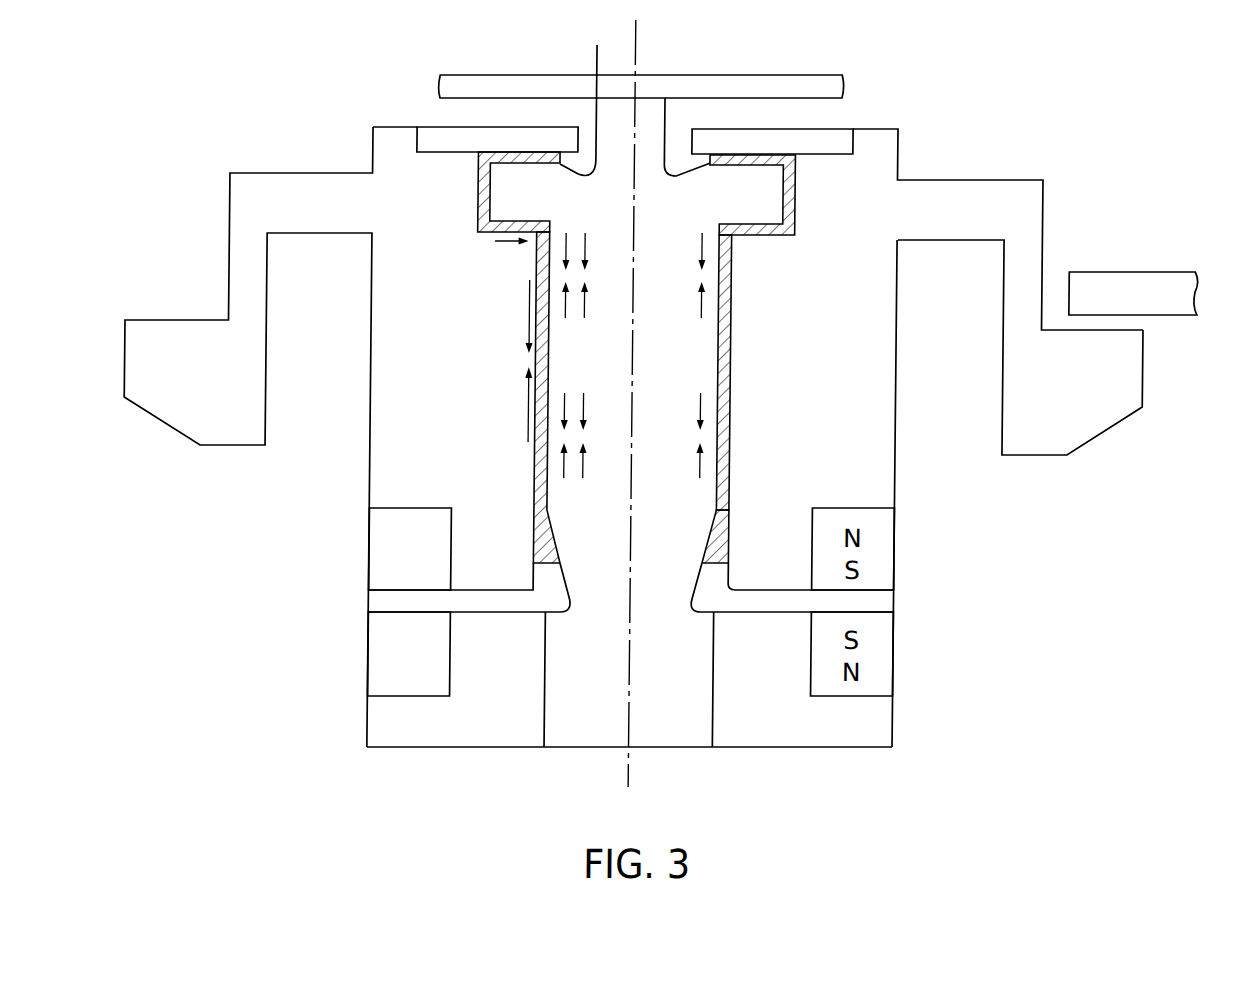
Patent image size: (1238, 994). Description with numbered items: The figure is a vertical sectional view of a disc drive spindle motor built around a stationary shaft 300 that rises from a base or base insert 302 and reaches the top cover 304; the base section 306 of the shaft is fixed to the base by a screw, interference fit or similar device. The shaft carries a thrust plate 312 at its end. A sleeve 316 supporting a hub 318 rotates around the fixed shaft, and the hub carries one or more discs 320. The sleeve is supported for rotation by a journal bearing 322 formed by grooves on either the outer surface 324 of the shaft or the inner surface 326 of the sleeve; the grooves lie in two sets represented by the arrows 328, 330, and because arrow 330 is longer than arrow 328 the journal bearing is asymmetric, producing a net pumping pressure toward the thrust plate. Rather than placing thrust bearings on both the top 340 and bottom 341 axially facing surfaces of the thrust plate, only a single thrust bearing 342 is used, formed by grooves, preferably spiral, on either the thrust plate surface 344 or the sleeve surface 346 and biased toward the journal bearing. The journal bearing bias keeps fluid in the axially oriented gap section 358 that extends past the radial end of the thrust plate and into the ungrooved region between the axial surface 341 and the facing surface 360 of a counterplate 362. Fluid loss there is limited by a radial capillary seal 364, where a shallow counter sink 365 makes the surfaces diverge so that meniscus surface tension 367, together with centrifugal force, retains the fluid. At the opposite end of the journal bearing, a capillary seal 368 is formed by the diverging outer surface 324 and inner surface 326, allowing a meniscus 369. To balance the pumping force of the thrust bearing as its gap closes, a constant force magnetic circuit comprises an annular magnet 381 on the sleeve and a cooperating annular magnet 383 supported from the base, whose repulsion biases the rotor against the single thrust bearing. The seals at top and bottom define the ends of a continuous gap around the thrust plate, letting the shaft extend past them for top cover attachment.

The stationary shaft 300 is at (692, 723).
The base or base insert 302 is at (877, 725).
The top cover 304 is at (773, 83).
The base section of the shaft 306 is at (602, 732).
The thrust plate 312 is at (750, 203).
The sleeve 316 is at (882, 489).
The hub 318 is at (1106, 420).
The disc 320 is at (1123, 285).
The journal bearing 322 is at (729, 380).
The outer surface of the shaft 324 is at (728, 320).
The inner surface of the sleeve 326 is at (726, 443).
The journal bearing groove set (arrow) 328 is at (532, 320).
The journal bearing groove set (arrow) 330 is at (532, 413).
The top axially facing surface of the thrust plate 340 is at (492, 233).
The bottom axially facing surface of the thrust plate 341 is at (489, 173).
The single thrust bearing 342 is at (514, 243).
The thrust plate surface 344 is at (530, 220).
The sleeve axial surface 346 is at (759, 237).
The axially oriented gap section 358 is at (480, 201).
The facing surface of counterplate 360 is at (490, 152).
The counterplate 362 is at (518, 140).
The radial capillary seal 364 is at (789, 189).
The shallow counter sink 365 is at (694, 175).
The meniscus surface tension 367 is at (588, 92).
The capillary seal 368 is at (728, 549).
The meniscus 369 is at (739, 587).
The magnet 381 is at (374, 552).
The cooperating magnet 383 is at (374, 658).